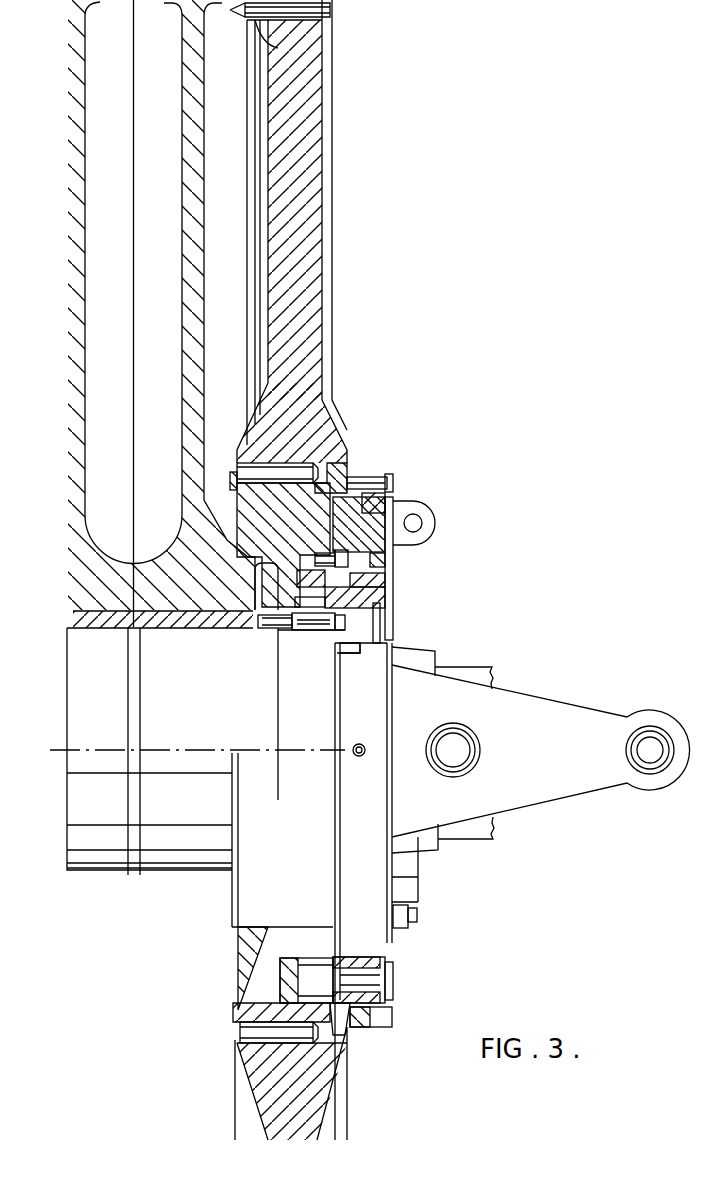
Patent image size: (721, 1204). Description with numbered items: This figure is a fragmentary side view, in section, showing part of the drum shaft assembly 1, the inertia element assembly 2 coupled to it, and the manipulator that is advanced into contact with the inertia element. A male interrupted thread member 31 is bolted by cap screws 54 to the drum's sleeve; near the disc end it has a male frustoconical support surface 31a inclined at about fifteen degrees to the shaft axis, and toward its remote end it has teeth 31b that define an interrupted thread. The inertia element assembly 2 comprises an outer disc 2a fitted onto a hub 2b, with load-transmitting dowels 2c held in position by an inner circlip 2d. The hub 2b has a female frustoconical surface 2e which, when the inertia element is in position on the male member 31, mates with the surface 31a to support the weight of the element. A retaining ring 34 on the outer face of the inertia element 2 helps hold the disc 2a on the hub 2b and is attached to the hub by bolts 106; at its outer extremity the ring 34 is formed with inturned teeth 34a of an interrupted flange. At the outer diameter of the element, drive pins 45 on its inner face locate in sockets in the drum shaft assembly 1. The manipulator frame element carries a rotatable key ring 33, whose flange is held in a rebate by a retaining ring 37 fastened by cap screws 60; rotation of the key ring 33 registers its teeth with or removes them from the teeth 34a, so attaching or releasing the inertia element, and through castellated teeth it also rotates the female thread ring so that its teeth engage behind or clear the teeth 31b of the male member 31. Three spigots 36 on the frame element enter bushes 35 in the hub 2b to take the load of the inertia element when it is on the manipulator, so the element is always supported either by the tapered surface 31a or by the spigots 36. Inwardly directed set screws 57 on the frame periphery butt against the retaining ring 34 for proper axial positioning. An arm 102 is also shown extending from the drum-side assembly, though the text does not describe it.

The drum shaft assembly 1 is at (176, 3).
The inertia element assembly 2 is at (322, 36).
The outer disc 2a is at (303, 233).
The hub 2b is at (292, 500).
The load-transmitting dowels 2c is at (263, 470).
The inner circlip 2d is at (232, 470).
The female frustoconical surface 2e is at (222, 612).
The drive pins 45 is at (272, 42).
The set screws 57 is at (373, 480).
The bolts 106 is at (375, 515).
The retaining ring 34 is at (388, 540).
The inturned teeth 34a is at (380, 598).
The cap screws 60 is at (392, 562).
The retaining ring 37 is at (392, 577).
The key ring 33 is at (373, 605).
The male interrupted thread member 31 is at (285, 631).
The male frustoconical support surface 31a is at (262, 631).
The teeth 31b is at (320, 632).
The cap screws 54 is at (350, 652).
The arm 102 is at (577, 783).
The spigots 36 is at (365, 1012).
The bushes 35 is at (340, 1022).